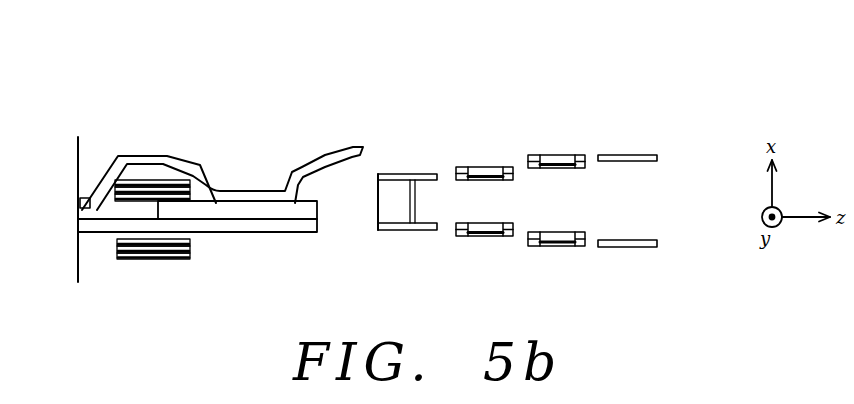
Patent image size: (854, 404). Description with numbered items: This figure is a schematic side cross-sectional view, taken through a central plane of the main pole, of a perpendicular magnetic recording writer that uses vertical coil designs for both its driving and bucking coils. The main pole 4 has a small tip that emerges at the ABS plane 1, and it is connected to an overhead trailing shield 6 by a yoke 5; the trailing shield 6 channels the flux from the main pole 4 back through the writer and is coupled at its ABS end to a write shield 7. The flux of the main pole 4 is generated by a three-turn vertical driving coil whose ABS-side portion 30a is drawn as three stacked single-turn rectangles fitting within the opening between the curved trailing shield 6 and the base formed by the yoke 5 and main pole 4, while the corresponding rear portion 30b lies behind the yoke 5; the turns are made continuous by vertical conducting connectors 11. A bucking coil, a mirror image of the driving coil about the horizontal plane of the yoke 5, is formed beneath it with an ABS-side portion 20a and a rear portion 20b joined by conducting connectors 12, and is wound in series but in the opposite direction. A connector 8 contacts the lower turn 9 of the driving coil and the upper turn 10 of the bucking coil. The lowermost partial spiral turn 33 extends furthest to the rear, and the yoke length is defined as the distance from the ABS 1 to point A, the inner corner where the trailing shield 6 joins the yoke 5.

The ABS plane 1 is at (78, 252).
The main pole 4 is at (80, 222).
The yoke 5 is at (318, 211).
The trailing shield 6 is at (118, 163).
The write shield 7 is at (80, 206).
The connector 8 is at (388, 213).
The lower turn of the driving coil 9 is at (405, 174).
The upper turn of the bucking coil 10 is at (497, 168).
The conducting connector for the driving coil 11 is at (565, 156).
The conducting connector for the bucking coil 12 is at (570, 241).
The bucking coil ABS-side portion 20a is at (258, 323).
The bucking coil rear portion 20b is at (483, 250).
The driving coil ABS-side portion 30a is at (275, 75).
The driving coil rear portion 30b is at (478, 160).
The lowermost partial spiral turn 33 is at (624, 156).
The point A is at (201, 192).